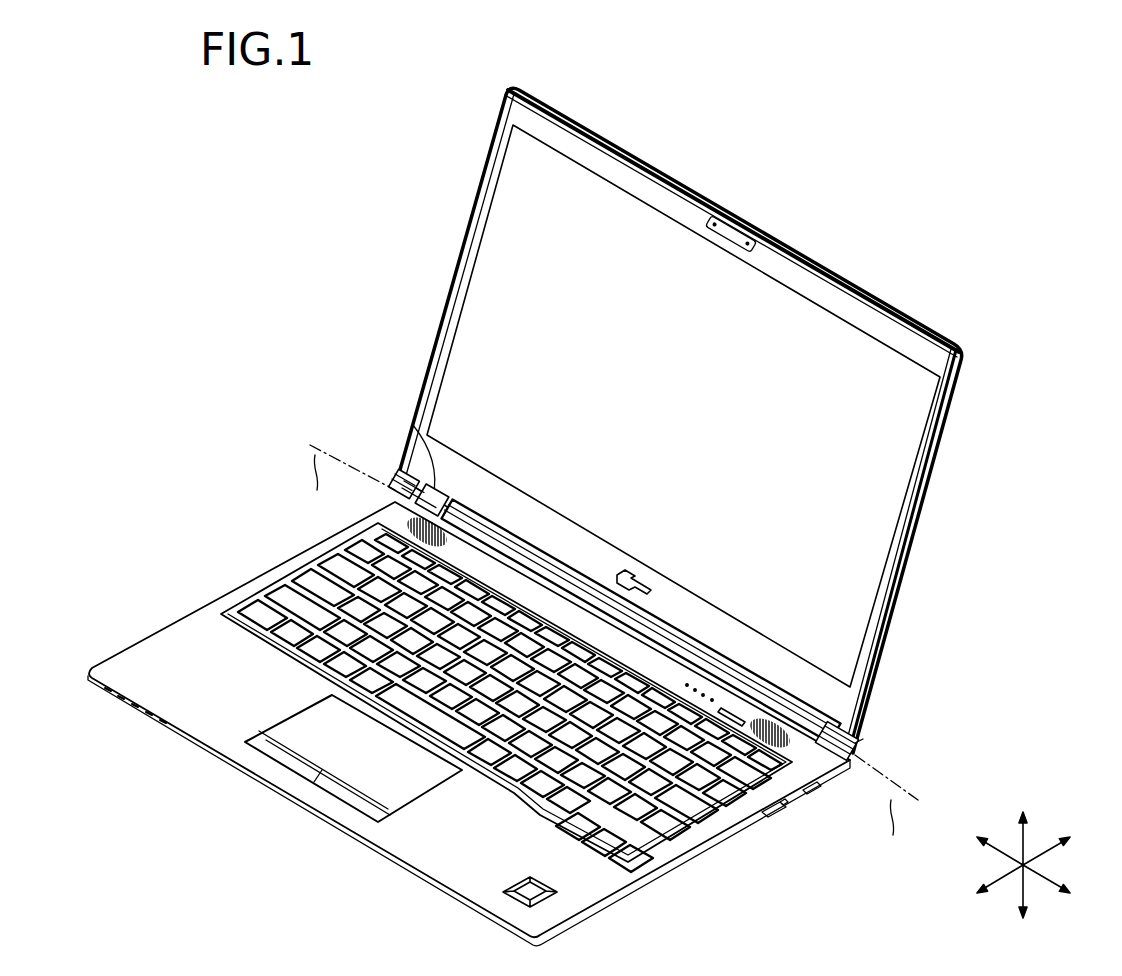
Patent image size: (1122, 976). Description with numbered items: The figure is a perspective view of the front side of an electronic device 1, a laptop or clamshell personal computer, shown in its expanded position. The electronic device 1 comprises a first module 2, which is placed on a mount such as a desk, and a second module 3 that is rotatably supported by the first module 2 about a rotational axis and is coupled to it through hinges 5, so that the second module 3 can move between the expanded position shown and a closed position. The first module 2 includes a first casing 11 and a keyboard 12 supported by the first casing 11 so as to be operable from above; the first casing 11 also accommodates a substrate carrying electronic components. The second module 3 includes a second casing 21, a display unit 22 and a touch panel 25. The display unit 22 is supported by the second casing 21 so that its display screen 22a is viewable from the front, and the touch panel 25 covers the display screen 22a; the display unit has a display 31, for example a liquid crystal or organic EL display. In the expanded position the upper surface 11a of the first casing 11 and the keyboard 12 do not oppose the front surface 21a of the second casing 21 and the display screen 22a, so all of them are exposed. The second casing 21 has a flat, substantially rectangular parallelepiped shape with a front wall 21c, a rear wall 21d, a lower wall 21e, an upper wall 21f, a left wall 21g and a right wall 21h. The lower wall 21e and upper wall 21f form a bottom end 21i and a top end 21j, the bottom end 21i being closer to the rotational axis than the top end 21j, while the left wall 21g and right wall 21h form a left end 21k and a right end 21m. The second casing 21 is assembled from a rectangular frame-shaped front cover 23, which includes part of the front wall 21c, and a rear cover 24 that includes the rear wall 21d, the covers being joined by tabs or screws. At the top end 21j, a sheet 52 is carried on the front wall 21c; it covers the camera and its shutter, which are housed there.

The electronic device 1 is at (491, 144).
The first module 2 is at (469, 724).
The second module 3 is at (695, 391).
The hinges 5 is at (430, 497).
The first casing 11 is at (469, 724).
The upper surface of the first casing 11a is at (463, 854).
The keyboard 12 is at (283, 598).
The second casing 21 is at (695, 391).
The front surface of the second casing 21a is at (695, 391).
The front wall 21c is at (695, 391).
The rear wall 21d is at (958, 551).
The lower wall 21e is at (704, 617).
The upper wall 21f is at (732, 200).
The left wall 21g is at (418, 295).
The right wall 21h is at (954, 550).
The bottom end 21i is at (858, 755).
The top end 21j is at (562, 108).
The left end 21k is at (468, 213).
The right end 21m is at (922, 520).
The display unit 22 is at (683, 356).
The display screen 22a is at (683, 356).
The front cover 23 is at (794, 284).
The rear cover 24 is at (948, 452).
The touch panel 25 is at (656, 237).
The display 31 is at (624, 218).
The sheet 52 is at (728, 232).